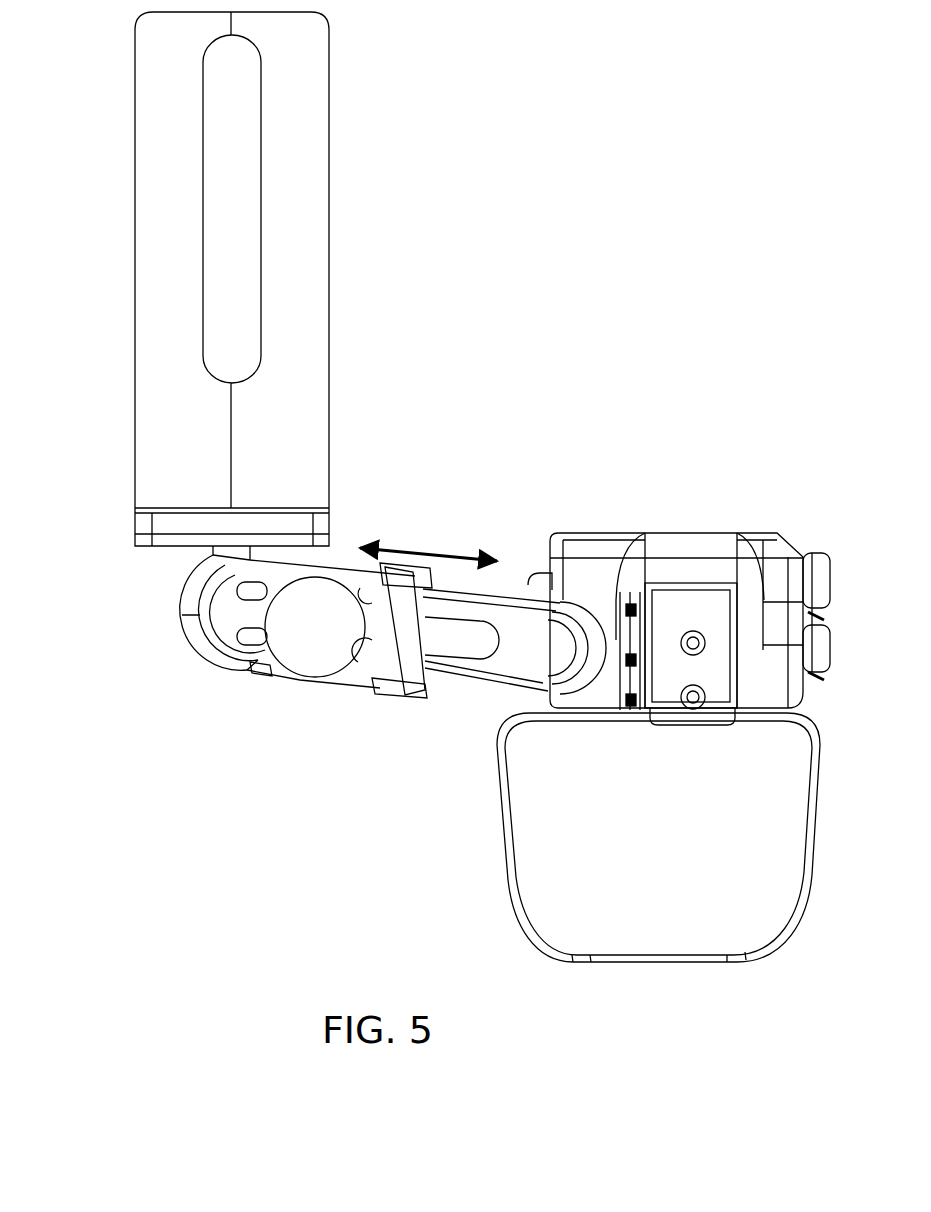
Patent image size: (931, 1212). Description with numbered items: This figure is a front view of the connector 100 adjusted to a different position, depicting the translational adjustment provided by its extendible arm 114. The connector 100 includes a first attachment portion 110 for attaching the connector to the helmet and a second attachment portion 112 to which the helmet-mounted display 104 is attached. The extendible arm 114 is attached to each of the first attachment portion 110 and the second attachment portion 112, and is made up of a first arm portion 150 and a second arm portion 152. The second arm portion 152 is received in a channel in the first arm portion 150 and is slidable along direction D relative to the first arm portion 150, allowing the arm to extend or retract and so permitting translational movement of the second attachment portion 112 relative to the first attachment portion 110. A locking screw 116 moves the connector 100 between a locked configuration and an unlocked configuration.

The connector 100 is at (517, 201).
The helmet-mounted display 104 is at (713, 545).
The first attachment portion 110 is at (136, 595).
The second attachment portion 112 is at (568, 716).
The extendible arm 114 is at (360, 750).
The locking screw 116 is at (263, 632).
The first arm portion 150 is at (265, 673).
The second arm portion 152 is at (500, 668).